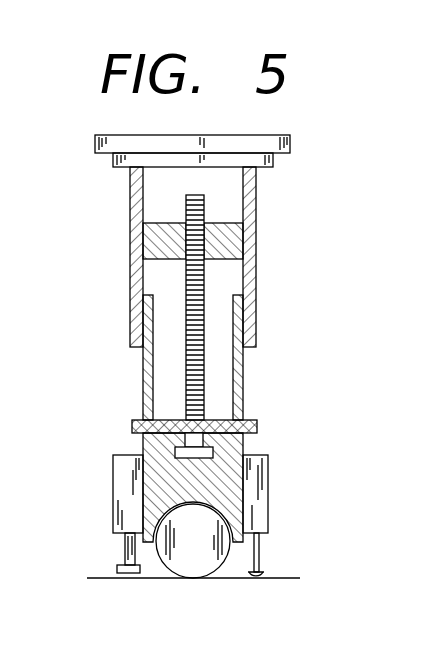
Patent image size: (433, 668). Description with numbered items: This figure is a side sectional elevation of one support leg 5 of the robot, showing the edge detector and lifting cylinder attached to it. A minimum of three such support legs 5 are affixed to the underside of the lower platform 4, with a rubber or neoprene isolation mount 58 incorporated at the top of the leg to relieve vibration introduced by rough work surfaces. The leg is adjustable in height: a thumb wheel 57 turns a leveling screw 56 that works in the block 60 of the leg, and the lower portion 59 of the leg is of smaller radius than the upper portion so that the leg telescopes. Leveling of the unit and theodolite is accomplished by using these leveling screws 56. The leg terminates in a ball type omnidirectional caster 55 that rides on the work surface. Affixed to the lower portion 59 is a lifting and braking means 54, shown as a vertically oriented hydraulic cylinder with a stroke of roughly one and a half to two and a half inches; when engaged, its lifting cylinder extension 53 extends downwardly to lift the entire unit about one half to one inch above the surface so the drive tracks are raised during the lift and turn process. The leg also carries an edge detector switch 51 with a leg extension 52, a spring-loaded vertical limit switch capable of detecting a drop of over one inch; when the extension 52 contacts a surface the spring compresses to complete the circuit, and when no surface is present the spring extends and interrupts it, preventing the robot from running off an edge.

The lower platform 4 is at (292, 135).
The support leg 5 is at (295, 206).
The isolation mount 58 is at (127, 167).
The block 60 is at (155, 237).
The leveling screw 56 is at (203, 272).
The lower portion of the leg 59 is at (143, 383).
The thumb wheel 57 is at (260, 420).
The lifting and braking means 54 is at (123, 490).
The edge detector switch 51 is at (262, 490).
The lifting cylinder extension 53 is at (122, 548).
The leg extension 52 is at (260, 548).
The ball type omnidirectional caster 55 is at (198, 558).